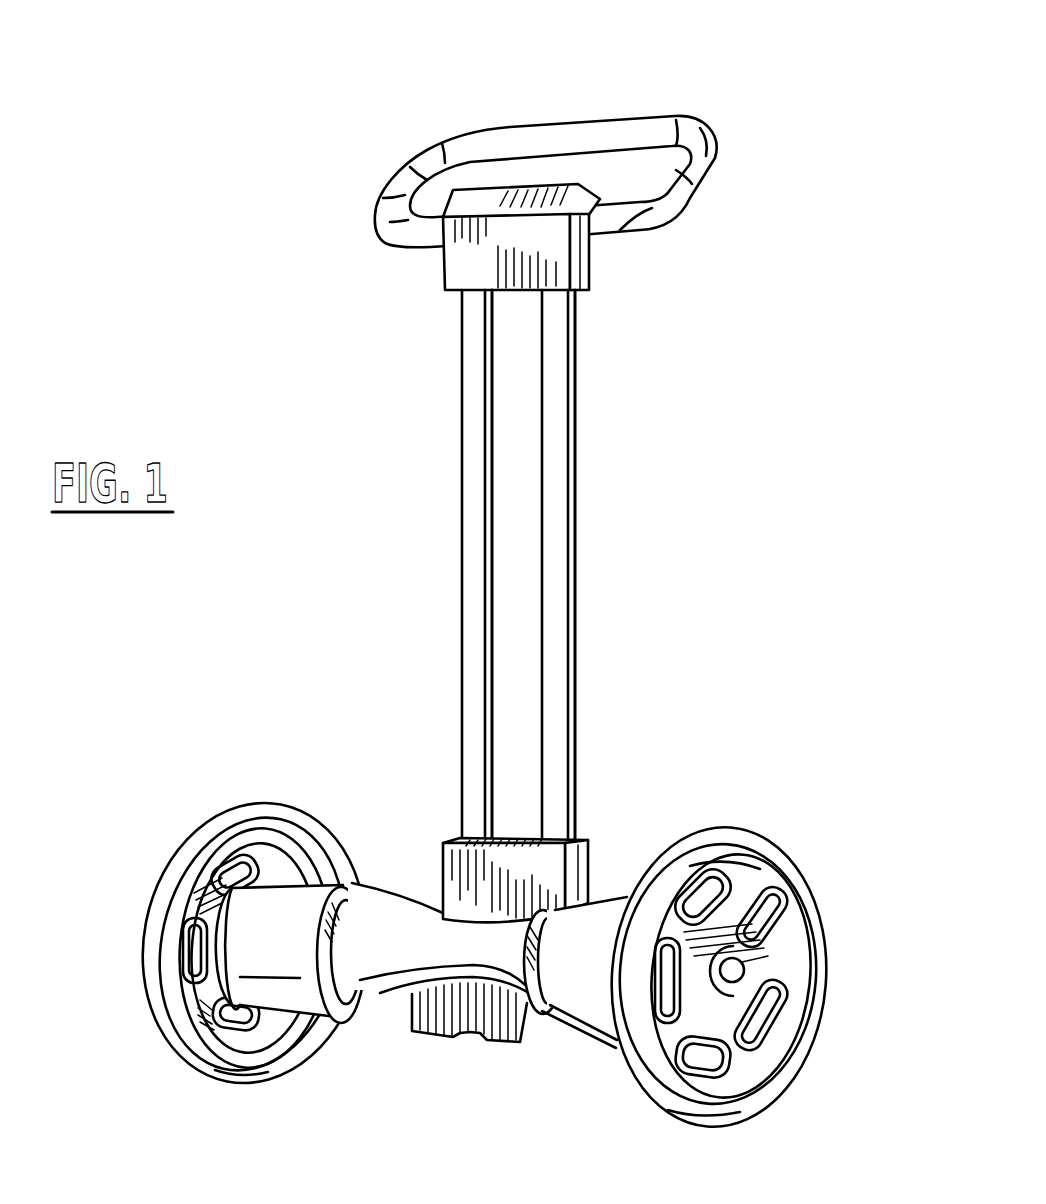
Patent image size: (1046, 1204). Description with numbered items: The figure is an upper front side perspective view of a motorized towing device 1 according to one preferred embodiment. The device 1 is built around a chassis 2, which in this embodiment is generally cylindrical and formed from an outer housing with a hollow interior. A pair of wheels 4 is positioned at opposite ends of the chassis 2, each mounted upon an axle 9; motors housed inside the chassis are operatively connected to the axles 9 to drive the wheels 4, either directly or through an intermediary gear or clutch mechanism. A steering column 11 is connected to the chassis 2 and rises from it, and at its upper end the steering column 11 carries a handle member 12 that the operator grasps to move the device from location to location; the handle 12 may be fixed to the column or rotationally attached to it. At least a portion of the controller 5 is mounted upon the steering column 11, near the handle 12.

The motorized towing device 1 is at (752, 430).
The chassis 2 is at (397, 983).
The wheels 4 is at (728, 840).
The controller 5 is at (560, 278).
The axles 9 is at (733, 971).
The steering column 11 is at (565, 423).
The handle member 12 is at (657, 128).